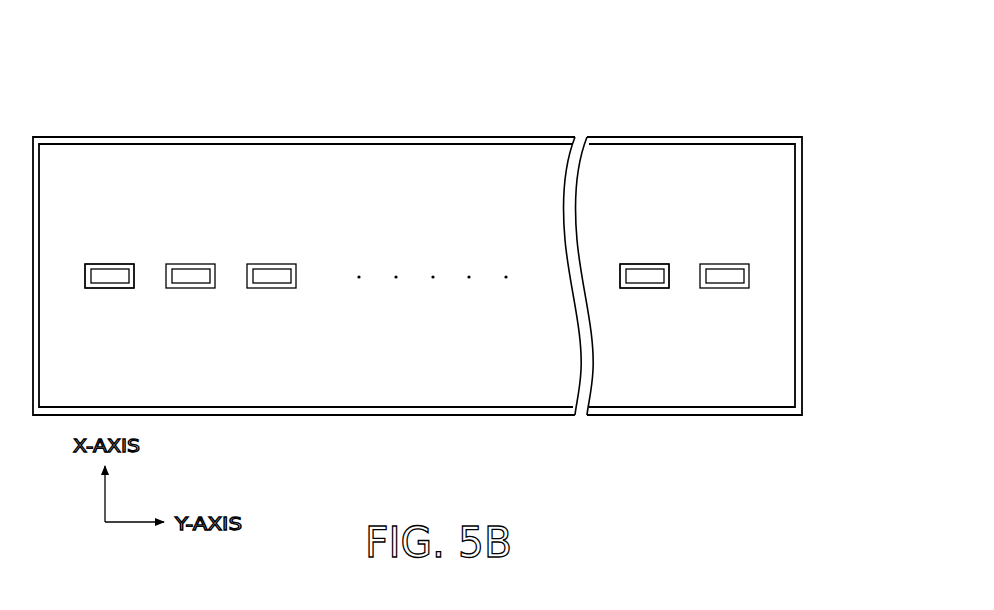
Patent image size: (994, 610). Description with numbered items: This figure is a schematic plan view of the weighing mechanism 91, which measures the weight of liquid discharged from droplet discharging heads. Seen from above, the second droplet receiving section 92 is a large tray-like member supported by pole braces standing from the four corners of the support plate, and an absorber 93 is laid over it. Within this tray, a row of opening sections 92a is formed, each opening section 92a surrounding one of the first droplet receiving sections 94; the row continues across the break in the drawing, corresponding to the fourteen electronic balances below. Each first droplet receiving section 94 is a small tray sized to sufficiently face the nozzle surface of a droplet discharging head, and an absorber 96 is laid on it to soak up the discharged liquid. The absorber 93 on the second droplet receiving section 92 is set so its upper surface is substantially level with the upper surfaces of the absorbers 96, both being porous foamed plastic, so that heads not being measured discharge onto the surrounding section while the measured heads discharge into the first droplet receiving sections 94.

The weighing mechanism 91 is at (768, 96).
The second droplet receiving section 92 is at (798, 223).
The absorber 93 is at (778, 175).
The first droplet receiving section 94 is at (107, 251).
The absorber 96 is at (108, 277).
The opening section 92a is at (117, 288).